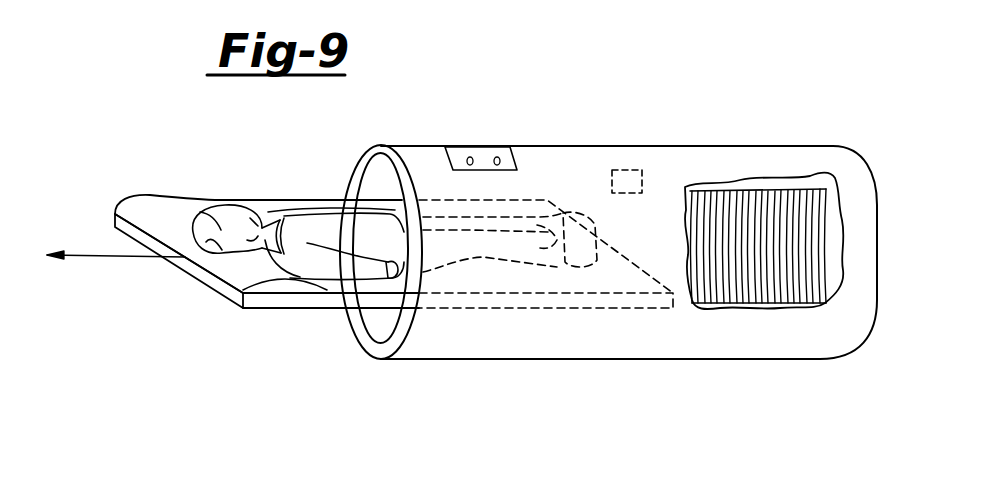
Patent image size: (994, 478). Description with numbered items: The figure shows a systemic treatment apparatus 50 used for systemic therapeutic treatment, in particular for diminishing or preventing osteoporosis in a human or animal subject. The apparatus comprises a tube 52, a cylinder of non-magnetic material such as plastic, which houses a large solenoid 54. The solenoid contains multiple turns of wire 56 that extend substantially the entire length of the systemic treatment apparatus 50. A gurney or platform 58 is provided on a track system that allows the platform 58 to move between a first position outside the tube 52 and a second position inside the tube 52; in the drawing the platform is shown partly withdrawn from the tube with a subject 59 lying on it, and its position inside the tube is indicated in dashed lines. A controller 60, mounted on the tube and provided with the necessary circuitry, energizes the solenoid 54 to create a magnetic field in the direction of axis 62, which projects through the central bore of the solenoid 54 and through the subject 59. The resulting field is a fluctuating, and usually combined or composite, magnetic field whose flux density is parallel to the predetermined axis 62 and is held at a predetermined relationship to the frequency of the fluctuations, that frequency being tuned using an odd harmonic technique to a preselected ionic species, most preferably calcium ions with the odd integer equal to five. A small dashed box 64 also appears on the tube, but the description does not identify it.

The systemic treatment apparatus 50 is at (703, 122).
The tube 52 is at (565, 340).
The solenoid 54 is at (776, 273).
The turns of wire 56 is at (730, 275).
The platform 58 is at (277, 302).
The subject 59 is at (317, 200).
The controller 60 is at (467, 152).
The axis 62 is at (107, 254).
The sensor location 64 is at (630, 170).